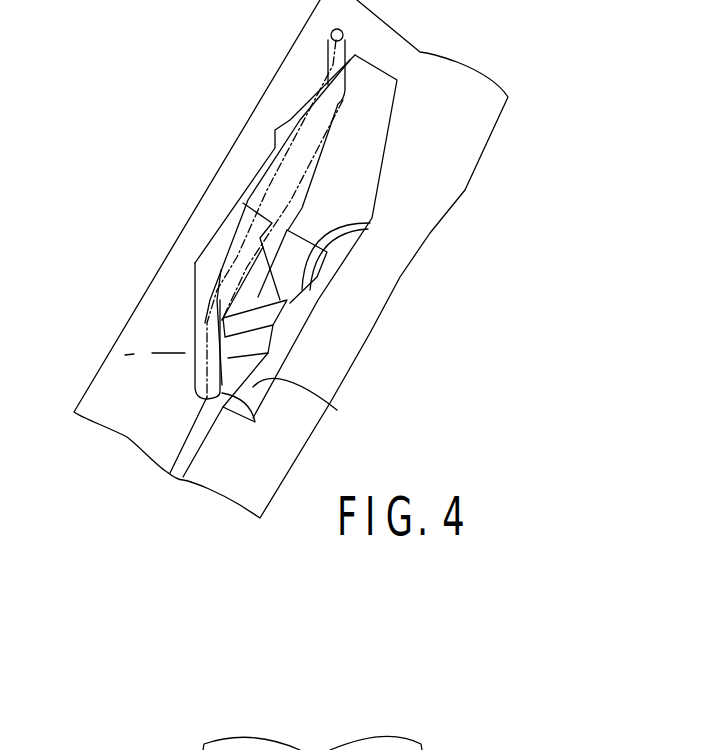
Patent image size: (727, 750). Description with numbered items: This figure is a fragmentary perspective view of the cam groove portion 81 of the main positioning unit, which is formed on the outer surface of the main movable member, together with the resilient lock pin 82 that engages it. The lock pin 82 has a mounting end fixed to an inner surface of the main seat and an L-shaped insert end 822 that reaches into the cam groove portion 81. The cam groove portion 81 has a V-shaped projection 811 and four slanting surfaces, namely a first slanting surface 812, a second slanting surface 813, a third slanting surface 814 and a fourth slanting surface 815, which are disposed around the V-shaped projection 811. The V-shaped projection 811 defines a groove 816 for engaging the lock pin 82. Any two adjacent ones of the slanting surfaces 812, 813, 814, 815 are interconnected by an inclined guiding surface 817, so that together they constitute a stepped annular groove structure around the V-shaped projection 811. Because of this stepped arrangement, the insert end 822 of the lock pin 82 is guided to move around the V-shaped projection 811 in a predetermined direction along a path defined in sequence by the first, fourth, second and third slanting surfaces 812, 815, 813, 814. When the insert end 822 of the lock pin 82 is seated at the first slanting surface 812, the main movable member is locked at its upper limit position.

The resilient lock pin 82 is at (327, 72).
The cam groove portion 81 is at (363, 152).
The V-shaped projection 811 is at (242, 323).
The first slanting surface 812 is at (337, 410).
The second slanting surface 813 is at (263, 300).
The third slanting surface 814 is at (242, 283).
The fourth slanting surface 815 is at (312, 282).
The groove 816 is at (195, 323).
The inclined guiding surface 817 is at (370, 223).
The L-shaped insert end 822 is at (108, 356).